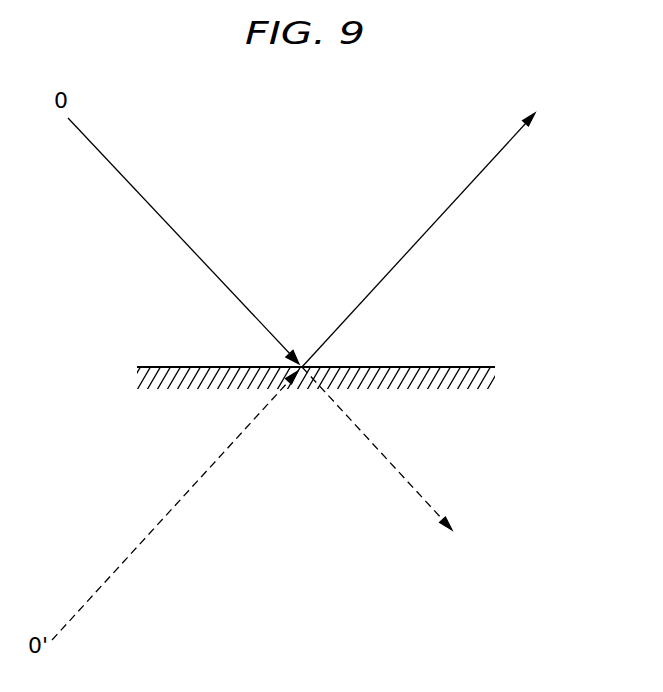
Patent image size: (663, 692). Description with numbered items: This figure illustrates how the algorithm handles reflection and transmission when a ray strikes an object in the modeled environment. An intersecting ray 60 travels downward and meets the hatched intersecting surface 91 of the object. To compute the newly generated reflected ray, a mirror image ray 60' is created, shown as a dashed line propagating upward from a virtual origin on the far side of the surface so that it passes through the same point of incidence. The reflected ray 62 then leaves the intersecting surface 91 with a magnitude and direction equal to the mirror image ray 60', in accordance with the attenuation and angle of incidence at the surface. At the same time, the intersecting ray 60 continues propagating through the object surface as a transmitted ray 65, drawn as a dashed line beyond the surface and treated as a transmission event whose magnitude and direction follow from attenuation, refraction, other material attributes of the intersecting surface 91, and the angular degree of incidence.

The intersecting surface 91 is at (435, 367).
The intersecting ray 60 is at (183, 241).
The reflected ray 62 is at (412, 247).
The transmitted ray 65 is at (398, 472).
The mirror image ray 60' is at (175, 505).